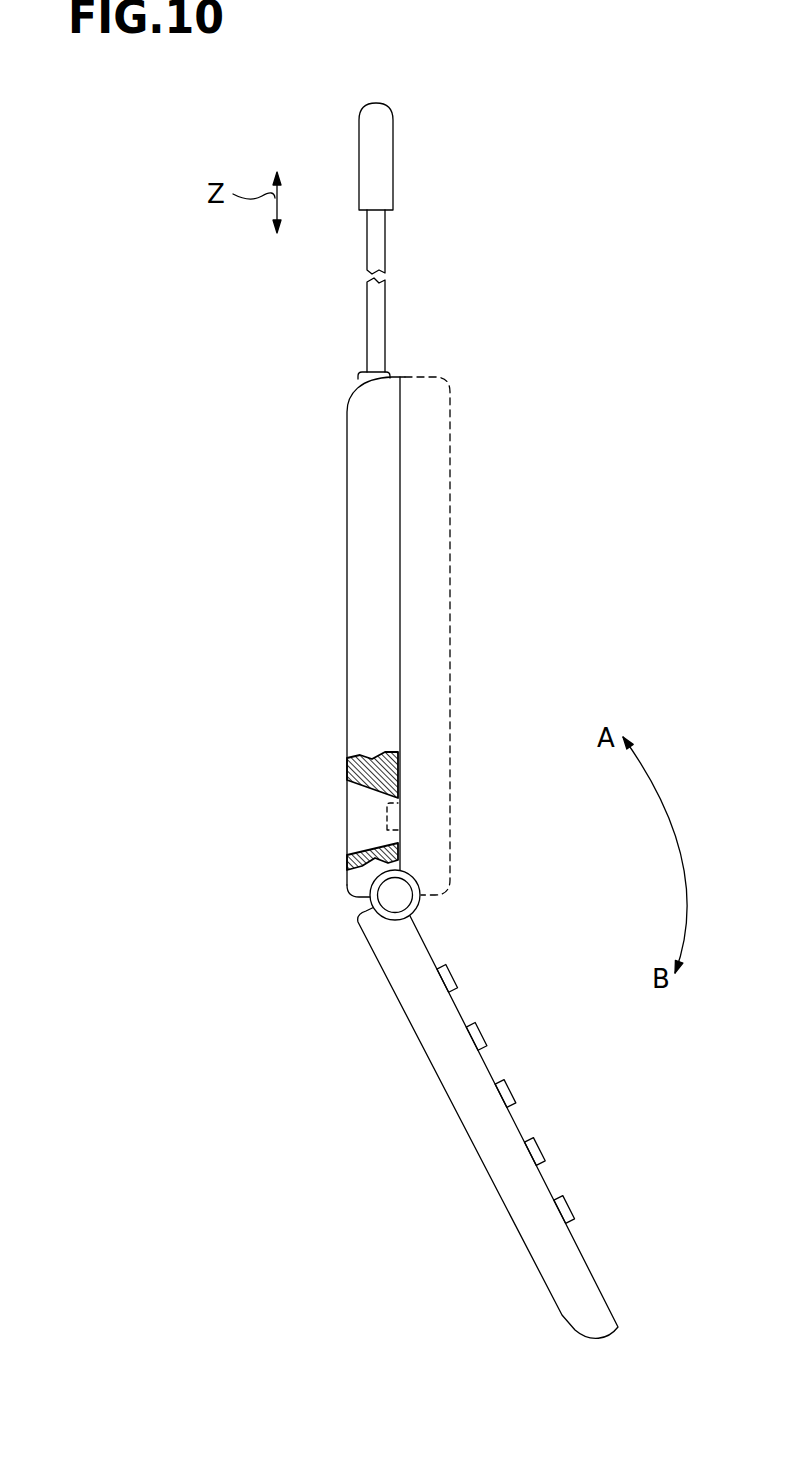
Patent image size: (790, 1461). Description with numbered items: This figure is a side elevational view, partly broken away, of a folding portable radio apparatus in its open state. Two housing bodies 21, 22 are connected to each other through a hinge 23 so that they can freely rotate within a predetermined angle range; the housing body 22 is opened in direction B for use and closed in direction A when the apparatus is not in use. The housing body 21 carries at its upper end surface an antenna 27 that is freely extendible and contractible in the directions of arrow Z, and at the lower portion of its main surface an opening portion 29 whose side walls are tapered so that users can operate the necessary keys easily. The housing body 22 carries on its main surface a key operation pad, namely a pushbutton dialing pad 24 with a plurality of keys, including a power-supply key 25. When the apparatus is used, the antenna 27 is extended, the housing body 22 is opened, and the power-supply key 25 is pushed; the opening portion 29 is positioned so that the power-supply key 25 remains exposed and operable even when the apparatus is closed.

The housing body 21 is at (400, 449).
The housing body 22 is at (452, 1120).
The hinge 23 is at (367, 902).
The pushbutton dialing pad 24 is at (490, 1028).
The power-supply key 25 is at (398, 808).
The antenna 27 is at (393, 160).
The opening portion 29 is at (355, 820).